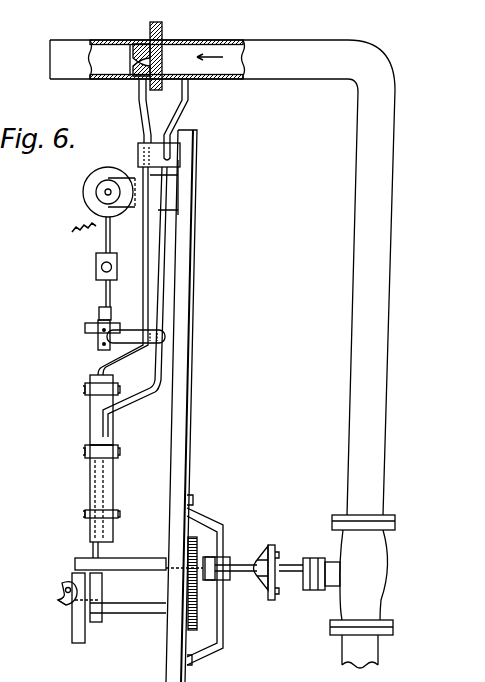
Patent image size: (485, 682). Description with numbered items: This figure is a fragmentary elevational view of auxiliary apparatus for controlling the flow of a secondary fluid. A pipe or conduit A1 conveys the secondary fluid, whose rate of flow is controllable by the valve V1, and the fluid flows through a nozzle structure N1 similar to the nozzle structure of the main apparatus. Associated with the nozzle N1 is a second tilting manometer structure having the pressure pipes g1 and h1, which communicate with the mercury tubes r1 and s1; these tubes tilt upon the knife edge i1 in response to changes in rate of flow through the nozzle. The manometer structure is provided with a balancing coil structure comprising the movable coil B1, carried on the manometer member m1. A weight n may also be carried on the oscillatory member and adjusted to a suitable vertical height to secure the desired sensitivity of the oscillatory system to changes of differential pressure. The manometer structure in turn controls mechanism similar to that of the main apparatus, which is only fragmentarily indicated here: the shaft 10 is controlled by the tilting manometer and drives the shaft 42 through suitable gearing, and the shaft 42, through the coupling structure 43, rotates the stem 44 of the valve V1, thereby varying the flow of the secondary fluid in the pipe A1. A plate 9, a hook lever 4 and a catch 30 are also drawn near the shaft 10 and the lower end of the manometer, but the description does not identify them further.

The pipe or conduit A1 is at (52, 45).
The nozzle structure N1 is at (148, 40).
The pressure pipe g1 is at (139, 97).
The pressure pipe h1 is at (187, 97).
The movable coil B1 is at (83, 191).
The manometer member m1 is at (106, 243).
The weight n is at (96, 265).
The knife edge i1 is at (95, 320).
The mercury tube r1 is at (90, 414).
The mercury tube s1 is at (110, 489).
The plate 9 is at (78, 643).
The shaft 10 is at (128, 613).
The hook lever 4 is at (62, 584).
The catch 30 is at (58, 598).
The shaft 42 is at (203, 560).
The coupling structure 43 is at (262, 542).
The stem 44 is at (292, 568).
The valve V1 is at (383, 565).